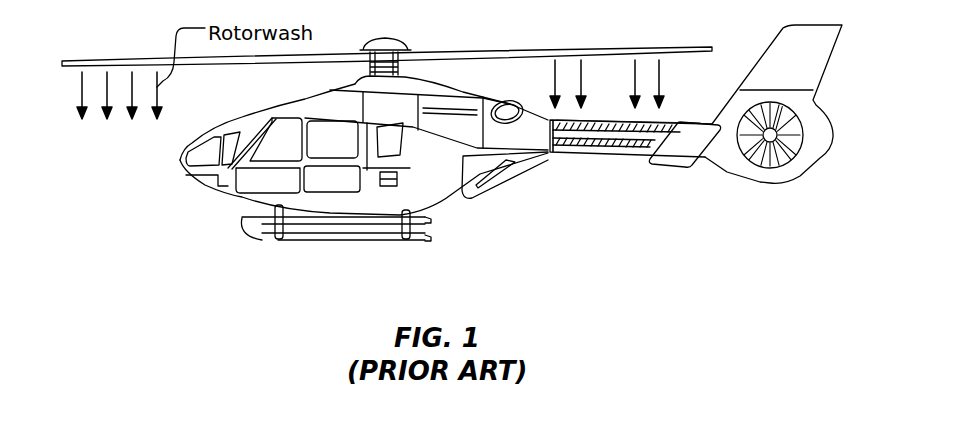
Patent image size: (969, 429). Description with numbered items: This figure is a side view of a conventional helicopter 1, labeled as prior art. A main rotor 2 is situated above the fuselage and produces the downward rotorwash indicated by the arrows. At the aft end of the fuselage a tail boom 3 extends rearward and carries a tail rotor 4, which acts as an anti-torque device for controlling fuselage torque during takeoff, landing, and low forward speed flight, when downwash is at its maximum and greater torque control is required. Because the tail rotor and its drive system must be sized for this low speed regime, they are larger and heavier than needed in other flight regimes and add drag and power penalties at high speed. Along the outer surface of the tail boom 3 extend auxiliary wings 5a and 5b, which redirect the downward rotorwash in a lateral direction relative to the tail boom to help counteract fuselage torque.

The helicopter 1 is at (241, 196).
The main rotor 2 is at (465, 50).
The tail boom 3 is at (618, 156).
The tail rotor 4 is at (797, 142).
The auxiliary wing 5a is at (573, 154).
The auxiliary wing 5b is at (583, 120).